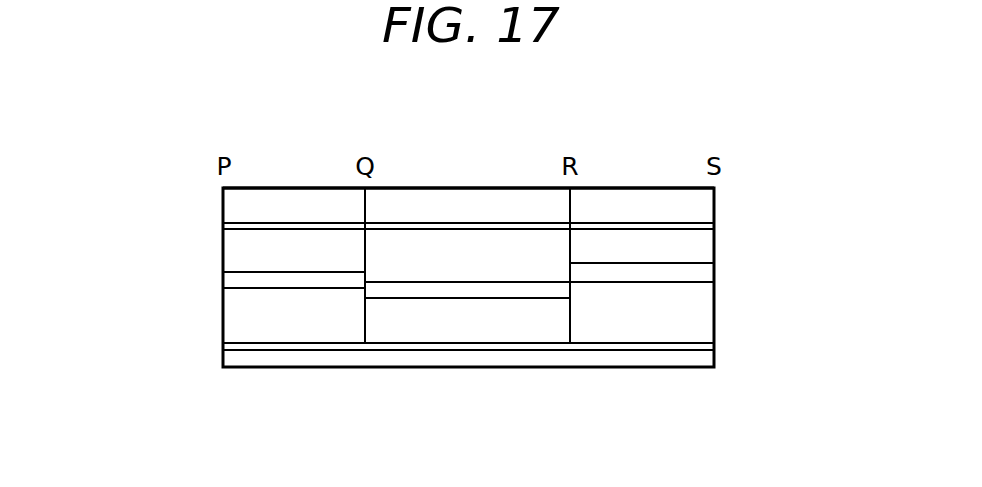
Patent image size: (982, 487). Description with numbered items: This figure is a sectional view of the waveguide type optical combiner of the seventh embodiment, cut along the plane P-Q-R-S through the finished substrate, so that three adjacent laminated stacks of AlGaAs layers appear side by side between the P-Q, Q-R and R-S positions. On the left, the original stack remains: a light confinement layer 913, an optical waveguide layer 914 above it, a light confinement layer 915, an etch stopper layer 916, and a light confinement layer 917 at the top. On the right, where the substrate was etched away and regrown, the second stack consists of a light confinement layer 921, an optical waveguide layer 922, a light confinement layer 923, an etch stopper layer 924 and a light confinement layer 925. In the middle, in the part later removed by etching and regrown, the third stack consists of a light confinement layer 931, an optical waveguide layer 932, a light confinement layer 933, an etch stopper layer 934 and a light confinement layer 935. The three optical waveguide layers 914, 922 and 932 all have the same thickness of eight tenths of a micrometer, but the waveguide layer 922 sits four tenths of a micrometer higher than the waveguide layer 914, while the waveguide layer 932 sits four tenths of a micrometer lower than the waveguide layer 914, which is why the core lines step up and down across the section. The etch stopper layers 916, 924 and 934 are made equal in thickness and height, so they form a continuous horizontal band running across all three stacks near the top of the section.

The light confinement layer 913 is at (250, 323).
The optical waveguide layer 914 is at (225, 288).
The light confinement layer 915 is at (247, 255).
The etch stopper layer 916 is at (225, 224).
The light confinement layer 917 is at (243, 205).
The light confinement layer 921 is at (703, 317).
The optical waveguide layer 922 is at (705, 273).
The light confinement layer 923 is at (705, 243).
The etch stopper layer 924 is at (713, 228).
The light confinement layer 925 is at (702, 202).
The light confinement layer 931 is at (422, 328).
The optical waveguide layer 932 is at (401, 288).
The light confinement layer 933 is at (391, 255).
The etch stopper layer 934 is at (430, 227).
The light confinement layer 935 is at (402, 208).